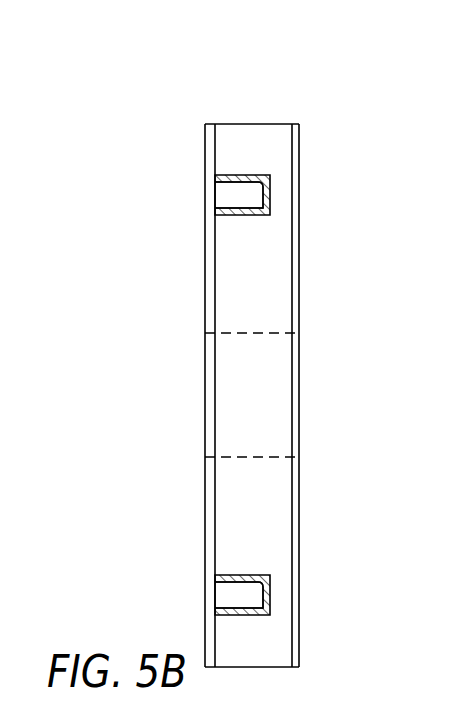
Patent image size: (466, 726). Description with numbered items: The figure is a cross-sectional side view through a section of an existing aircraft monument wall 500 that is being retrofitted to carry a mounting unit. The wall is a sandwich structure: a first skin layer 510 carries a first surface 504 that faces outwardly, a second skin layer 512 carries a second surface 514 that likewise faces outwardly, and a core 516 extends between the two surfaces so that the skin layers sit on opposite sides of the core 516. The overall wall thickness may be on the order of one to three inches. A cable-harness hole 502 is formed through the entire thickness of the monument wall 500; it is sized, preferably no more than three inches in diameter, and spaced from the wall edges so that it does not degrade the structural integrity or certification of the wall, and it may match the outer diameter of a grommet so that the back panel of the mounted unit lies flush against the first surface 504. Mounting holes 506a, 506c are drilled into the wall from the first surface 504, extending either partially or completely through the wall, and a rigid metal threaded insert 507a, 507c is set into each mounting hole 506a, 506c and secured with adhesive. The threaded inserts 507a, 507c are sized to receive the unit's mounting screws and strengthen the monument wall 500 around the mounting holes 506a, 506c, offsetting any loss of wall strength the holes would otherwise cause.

The monument wall 500 is at (127, 97).
The cable-harness hole 502 is at (270, 393).
The first surface 504 is at (207, 290).
The mounting hole 506a is at (222, 197).
The mounting hole 506c is at (220, 597).
The threaded insert 507a is at (250, 175).
The threaded insert 507c is at (255, 575).
The first skin layer 510 is at (210, 124).
The second skin layer 512 is at (300, 124).
The second surface 514 is at (303, 185).
The core 516 is at (271, 539).